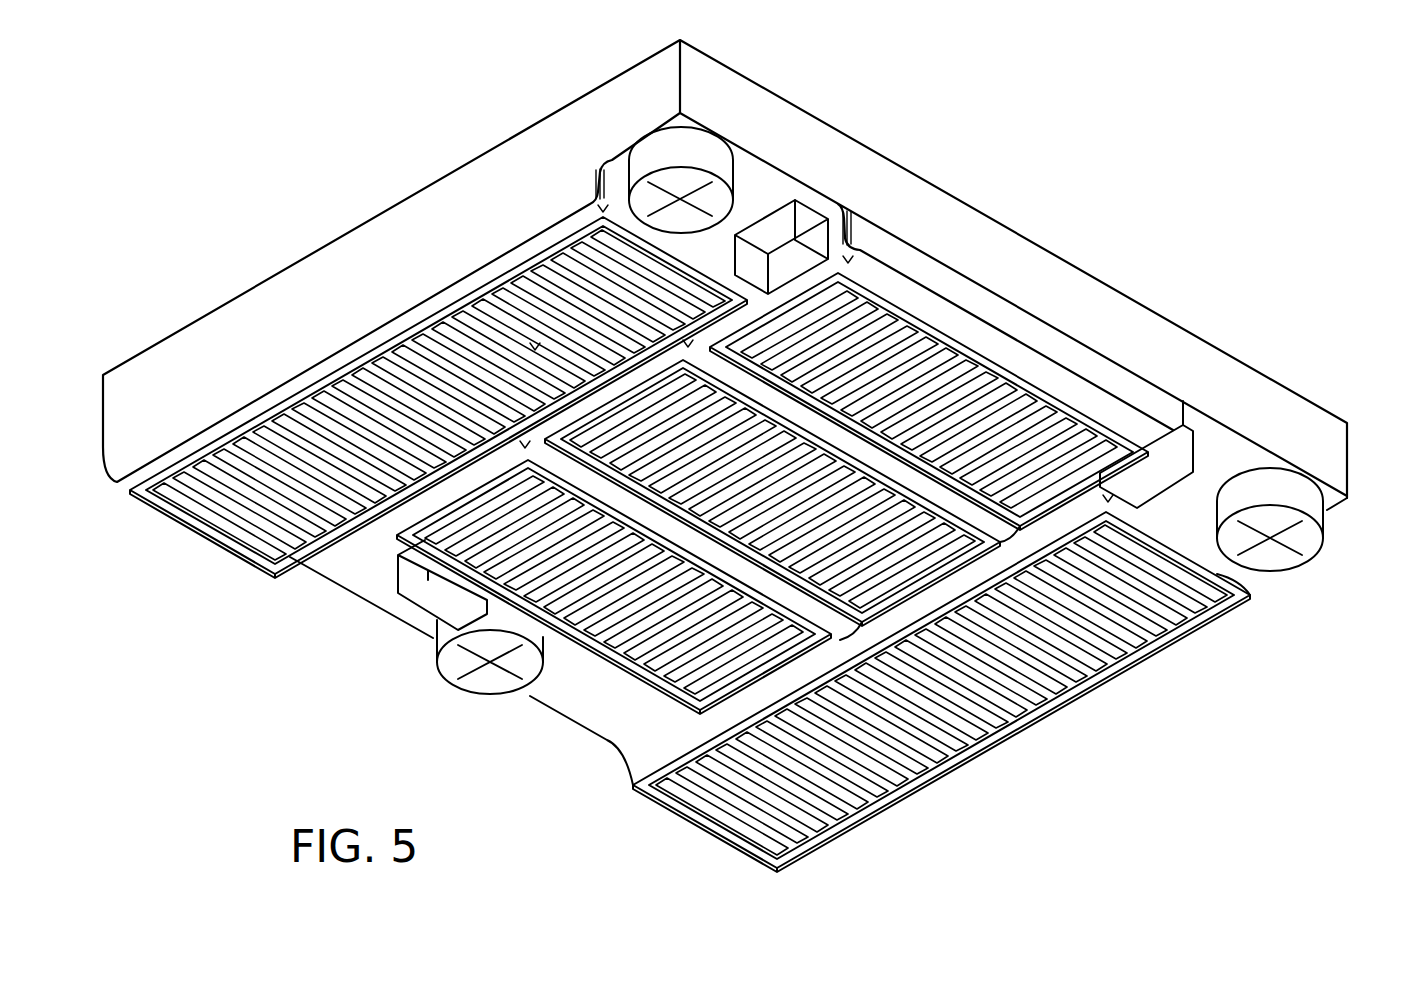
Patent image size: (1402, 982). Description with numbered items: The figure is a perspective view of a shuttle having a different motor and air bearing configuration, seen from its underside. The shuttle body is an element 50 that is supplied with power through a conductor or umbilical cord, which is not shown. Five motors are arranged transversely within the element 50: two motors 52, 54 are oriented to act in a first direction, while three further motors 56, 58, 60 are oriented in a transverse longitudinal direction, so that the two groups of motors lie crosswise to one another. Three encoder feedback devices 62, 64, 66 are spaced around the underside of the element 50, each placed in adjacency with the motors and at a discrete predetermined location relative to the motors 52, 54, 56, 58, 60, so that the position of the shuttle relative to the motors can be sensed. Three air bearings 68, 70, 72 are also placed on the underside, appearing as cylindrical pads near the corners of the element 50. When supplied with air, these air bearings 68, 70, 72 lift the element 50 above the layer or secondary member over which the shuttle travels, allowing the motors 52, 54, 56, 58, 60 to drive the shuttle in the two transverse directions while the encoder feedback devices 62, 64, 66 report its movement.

The element 50 is at (365, 240).
The motor 52 is at (193, 537).
The motor 54 is at (708, 833).
The motor 56 is at (1145, 387).
The motor 58 is at (580, 415).
The motor 60 is at (590, 652).
The encoder feedback device 62 is at (812, 220).
The encoder feedback device 64 is at (1183, 440).
The encoder feedback device 66 is at (408, 607).
The air bearing 68 is at (637, 150).
The air bearing 70 is at (1325, 527).
The air bearing 72 is at (452, 690).